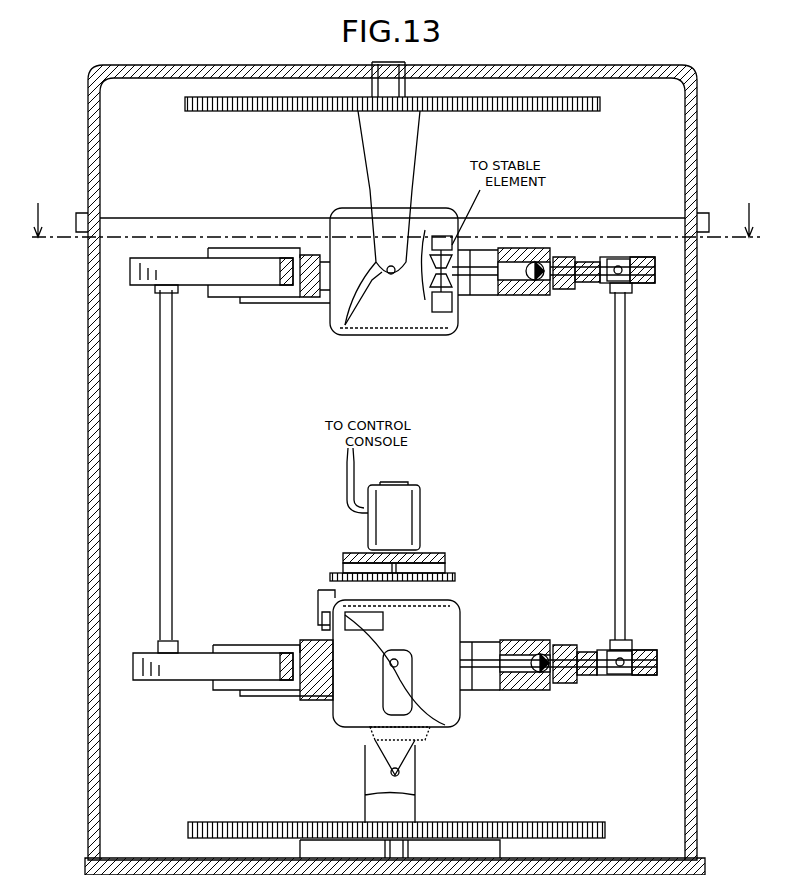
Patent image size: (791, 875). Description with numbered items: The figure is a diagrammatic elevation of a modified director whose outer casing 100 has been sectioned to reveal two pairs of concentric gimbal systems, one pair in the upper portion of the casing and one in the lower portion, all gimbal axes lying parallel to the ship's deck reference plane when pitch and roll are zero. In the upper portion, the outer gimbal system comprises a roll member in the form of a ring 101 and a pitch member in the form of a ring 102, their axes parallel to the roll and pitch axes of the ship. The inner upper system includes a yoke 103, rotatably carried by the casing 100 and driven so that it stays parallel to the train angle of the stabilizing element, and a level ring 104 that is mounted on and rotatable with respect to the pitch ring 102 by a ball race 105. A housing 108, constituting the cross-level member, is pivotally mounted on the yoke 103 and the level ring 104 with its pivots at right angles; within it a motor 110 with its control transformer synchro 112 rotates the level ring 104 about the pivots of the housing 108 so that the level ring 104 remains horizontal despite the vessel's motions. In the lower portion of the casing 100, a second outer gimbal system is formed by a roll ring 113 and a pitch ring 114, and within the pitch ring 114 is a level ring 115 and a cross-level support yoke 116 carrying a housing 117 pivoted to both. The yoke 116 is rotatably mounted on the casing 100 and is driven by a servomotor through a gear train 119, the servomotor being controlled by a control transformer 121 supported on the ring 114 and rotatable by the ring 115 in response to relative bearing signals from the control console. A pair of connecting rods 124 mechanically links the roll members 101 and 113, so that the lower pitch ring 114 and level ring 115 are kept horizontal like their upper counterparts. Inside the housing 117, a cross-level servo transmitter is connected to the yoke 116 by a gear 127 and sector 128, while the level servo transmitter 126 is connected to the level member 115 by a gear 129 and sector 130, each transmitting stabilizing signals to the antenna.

The outer casing 100 is at (697, 372).
The roll ring 101 is at (633, 284).
The pitch ring 102 is at (566, 292).
The yoke 103 is at (420, 145).
The level ring 104 is at (510, 300).
The ball race 105 is at (535, 282).
The housing 108 is at (346, 208).
The motor 110 is at (408, 330).
The control transformer synchro 112 is at (440, 236).
The roll ring 113 is at (636, 677).
The pitch ring 114 is at (343, 553).
The level ring 115 is at (455, 575).
The cross-level support yoke 116 is at (365, 802).
The housing 117 is at (340, 722).
The gear train 119 is at (560, 822).
The control transformer 121 is at (422, 515).
The connecting rods 124 is at (172, 420).
The level servo transmitter 126 is at (455, 610).
The gear 127 is at (432, 727).
The sector 128 is at (420, 762).
The gear 129 is at (322, 622).
The sector 130 is at (318, 600).